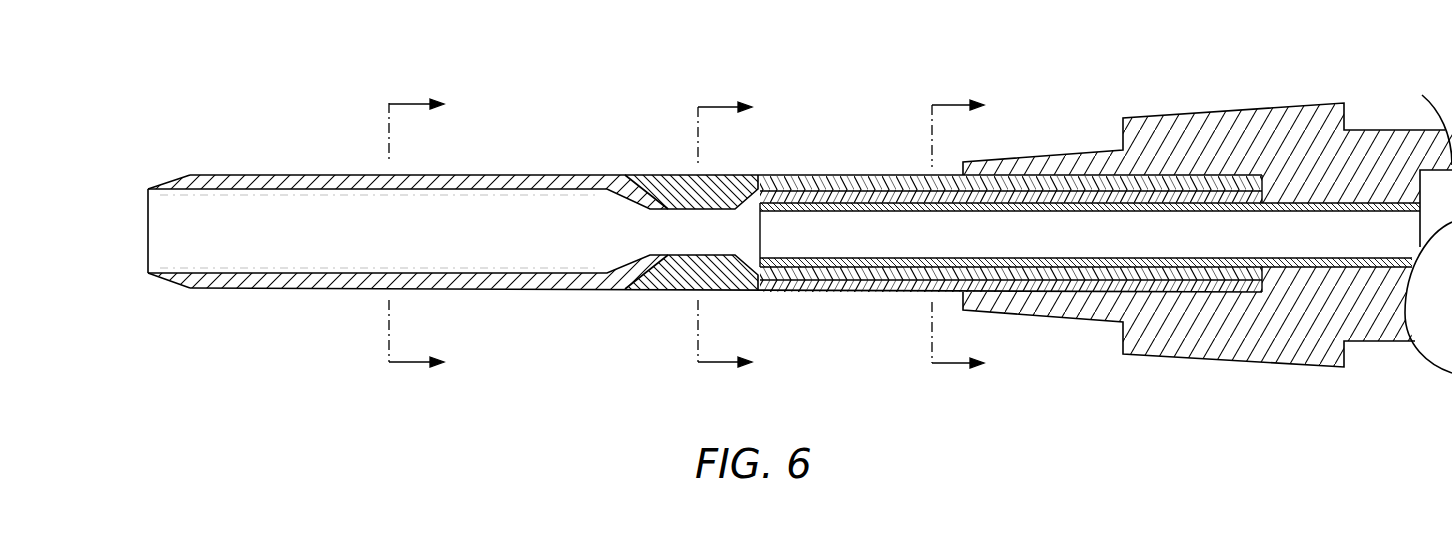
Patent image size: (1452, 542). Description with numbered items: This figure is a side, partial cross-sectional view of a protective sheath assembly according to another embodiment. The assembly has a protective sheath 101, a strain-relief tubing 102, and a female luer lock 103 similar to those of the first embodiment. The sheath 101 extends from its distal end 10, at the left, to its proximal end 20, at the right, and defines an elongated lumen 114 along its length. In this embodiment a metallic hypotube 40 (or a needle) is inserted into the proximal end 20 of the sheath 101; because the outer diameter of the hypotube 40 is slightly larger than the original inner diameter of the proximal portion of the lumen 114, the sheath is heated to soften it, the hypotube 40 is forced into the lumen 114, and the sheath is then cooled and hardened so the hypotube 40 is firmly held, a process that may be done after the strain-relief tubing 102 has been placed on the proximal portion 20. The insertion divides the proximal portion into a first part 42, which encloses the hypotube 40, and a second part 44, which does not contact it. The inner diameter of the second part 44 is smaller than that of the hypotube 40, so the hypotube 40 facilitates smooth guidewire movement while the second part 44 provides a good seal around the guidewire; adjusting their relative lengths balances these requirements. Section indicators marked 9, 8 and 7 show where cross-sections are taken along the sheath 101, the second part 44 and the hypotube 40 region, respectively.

The distal end 10 is at (172, 299).
The proximal end 20 is at (907, 122).
The metallic hypotube 40 is at (880, 262).
The first part 42 is at (992, 270).
The second part 44 is at (706, 208).
The protective sheath 101 is at (500, 292).
The strain-relief tubing 102 is at (893, 175).
The female luer lock 103 is at (1194, 76).
The lumen 114 is at (331, 224).
The section line 7- 7 is at (960, 237).
The section line 8- 8 is at (725, 235).
The section line 9- 9 is at (416, 236).